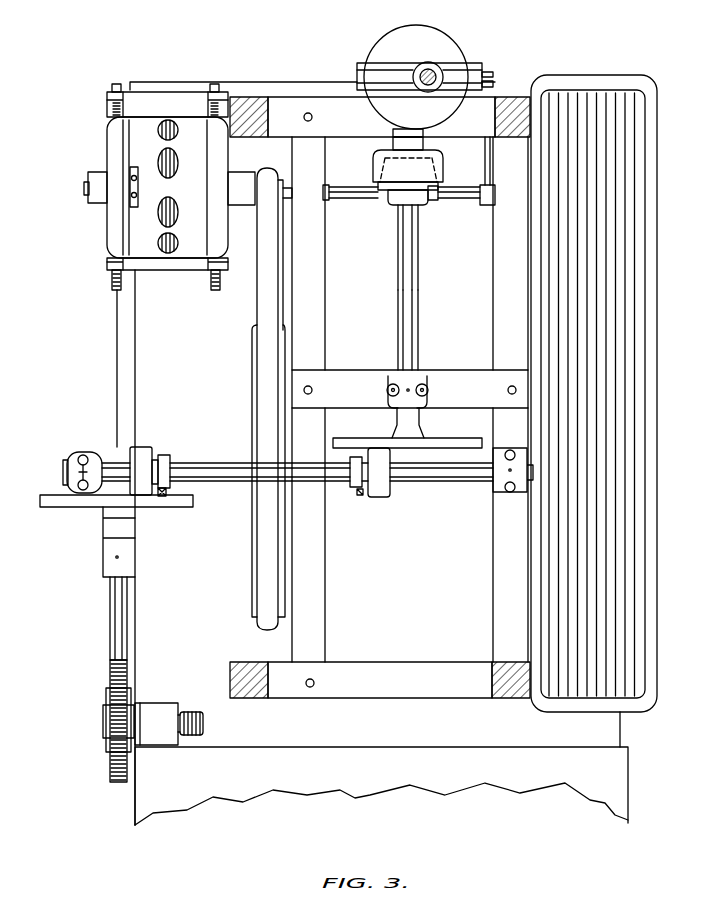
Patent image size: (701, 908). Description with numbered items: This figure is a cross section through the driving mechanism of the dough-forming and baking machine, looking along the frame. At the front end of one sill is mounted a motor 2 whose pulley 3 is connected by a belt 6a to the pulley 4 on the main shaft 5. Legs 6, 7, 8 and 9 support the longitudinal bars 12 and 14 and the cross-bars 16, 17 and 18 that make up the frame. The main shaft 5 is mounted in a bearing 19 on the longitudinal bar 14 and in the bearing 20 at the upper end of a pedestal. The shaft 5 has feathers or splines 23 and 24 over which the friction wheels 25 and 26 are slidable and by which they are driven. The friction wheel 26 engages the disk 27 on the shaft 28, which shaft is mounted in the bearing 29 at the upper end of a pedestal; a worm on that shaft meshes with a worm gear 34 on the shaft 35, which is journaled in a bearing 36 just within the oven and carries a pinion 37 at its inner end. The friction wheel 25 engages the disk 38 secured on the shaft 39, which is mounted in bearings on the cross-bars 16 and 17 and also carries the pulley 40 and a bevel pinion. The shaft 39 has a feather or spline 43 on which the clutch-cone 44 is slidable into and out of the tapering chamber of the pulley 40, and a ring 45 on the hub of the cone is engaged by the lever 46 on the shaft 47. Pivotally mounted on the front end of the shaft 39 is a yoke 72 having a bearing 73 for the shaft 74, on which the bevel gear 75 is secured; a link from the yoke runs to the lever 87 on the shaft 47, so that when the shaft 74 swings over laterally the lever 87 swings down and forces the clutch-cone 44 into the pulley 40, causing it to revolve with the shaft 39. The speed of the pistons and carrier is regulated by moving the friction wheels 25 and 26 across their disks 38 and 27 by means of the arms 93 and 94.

The motor 2 is at (169, 454).
The pulley 3 is at (257, 172).
The pulley 4 is at (252, 343).
The main shaft 5 is at (456, 482).
The leg 6 is at (247, 97).
The belt 6a is at (272, 255).
The leg 7 is at (232, 685).
The leg 8 is at (512, 98).
The leg 9 is at (510, 700).
The longitudinal bar 12 is at (308, 399).
The longitudinal bar 14 is at (510, 399).
The cross-bar 16 is at (381, 117).
The cross-bar 17 is at (410, 389).
The cross-bar 18 is at (380, 680).
The bearing 19 is at (503, 493).
The bearing 20 is at (83, 455).
The feather or spline 23 is at (320, 481).
The feather or spline 24 is at (200, 470).
The friction wheel 25 is at (380, 497).
The friction wheel 26 is at (143, 450).
The disk 27 is at (182, 507).
The shaft 28 is at (118, 617).
The bearing 29 is at (105, 565).
The worm gear 34 is at (115, 783).
The shaft 35 is at (204, 725).
The bearing 36 is at (156, 724).
The pinion 37 is at (191, 712).
The disk 38 is at (458, 440).
The shaft 39 is at (413, 307).
The pulley 40 is at (373, 163).
The feather or spline 43 is at (413, 238).
The clutch-cone 44 is at (385, 191).
The ring 45 is at (396, 206).
The lever 46 is at (436, 201).
The shaft 47 is at (455, 200).
The yoke 72 is at (363, 73).
The bearing 73 is at (427, 68).
The shaft 74 is at (434, 71).
The bevel gear 75 is at (416, 81).
The lever 87 is at (485, 155).
The arm 93 is at (163, 497).
The arm 94 is at (360, 496).